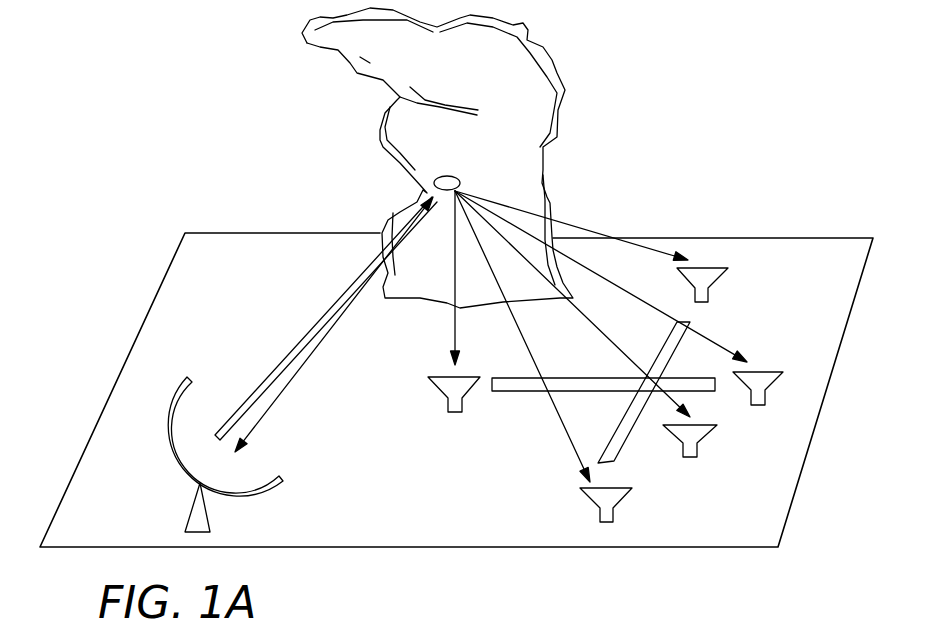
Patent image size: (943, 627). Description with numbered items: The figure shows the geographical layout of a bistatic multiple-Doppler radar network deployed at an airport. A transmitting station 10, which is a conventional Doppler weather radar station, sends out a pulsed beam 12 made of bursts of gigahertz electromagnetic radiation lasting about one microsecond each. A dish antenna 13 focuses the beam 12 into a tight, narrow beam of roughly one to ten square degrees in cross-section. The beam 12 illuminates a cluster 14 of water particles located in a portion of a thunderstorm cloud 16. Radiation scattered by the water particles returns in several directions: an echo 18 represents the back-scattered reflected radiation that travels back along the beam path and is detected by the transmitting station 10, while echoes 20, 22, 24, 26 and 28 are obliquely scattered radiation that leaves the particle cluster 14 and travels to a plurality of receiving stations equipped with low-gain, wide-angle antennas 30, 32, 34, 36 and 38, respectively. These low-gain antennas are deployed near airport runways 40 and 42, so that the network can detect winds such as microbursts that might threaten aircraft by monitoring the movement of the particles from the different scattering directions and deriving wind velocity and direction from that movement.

The transmitting station 10 is at (192, 510).
The pulsed beam 12 is at (305, 340).
The dish antenna 13 is at (177, 445).
The cluster of water particles 14 is at (460, 181).
The thunderstorm cloud 16 is at (400, 137).
The echo 18 is at (297, 380).
The echo 20 is at (453, 332).
The echo 22 is at (574, 447).
The echo 24 is at (607, 338).
The echo 26 is at (710, 341).
The echo 28 is at (600, 230).
The low-gain wide-angle antenna 30 is at (447, 396).
The low-gain wide-angle antenna 32 is at (614, 507).
The low-gain wide-angle antenna 34 is at (696, 443).
The low-gain wide-angle antenna 36 is at (773, 372).
The low-gain wide-angle antenna 38 is at (708, 293).
The airport runway 40 is at (532, 392).
The airport runway 42 is at (618, 450).